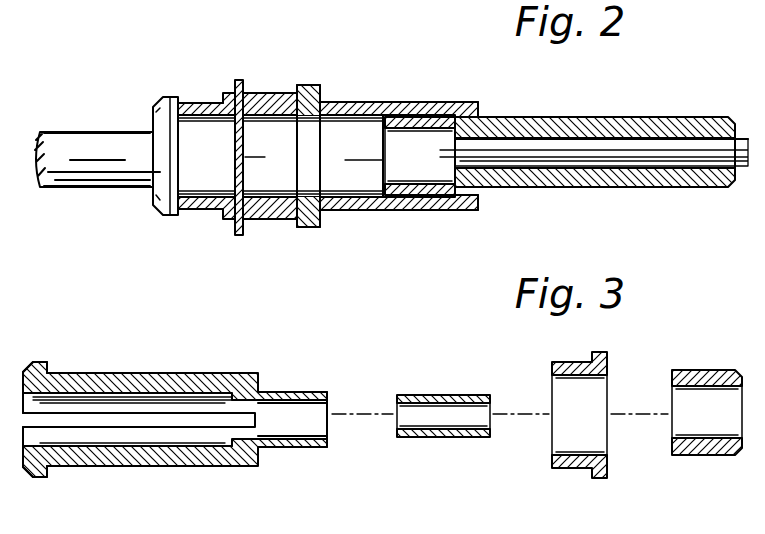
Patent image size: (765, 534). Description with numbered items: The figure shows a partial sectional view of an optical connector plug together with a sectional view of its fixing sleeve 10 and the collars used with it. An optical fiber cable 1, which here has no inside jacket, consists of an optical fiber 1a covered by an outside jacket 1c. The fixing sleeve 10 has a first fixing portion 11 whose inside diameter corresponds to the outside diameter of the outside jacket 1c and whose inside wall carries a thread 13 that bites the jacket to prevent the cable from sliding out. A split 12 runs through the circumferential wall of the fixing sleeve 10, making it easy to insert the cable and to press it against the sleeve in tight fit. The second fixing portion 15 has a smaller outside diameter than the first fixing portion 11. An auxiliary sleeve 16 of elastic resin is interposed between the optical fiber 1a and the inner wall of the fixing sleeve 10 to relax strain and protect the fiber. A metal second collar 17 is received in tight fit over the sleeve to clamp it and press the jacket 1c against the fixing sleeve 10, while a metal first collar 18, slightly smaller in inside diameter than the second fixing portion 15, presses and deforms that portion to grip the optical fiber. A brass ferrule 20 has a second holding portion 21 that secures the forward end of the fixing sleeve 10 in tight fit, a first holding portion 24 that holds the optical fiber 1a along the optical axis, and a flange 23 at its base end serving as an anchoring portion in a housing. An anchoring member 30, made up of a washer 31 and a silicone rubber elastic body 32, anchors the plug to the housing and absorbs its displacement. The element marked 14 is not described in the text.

In FIG. 2, the optical fiber cable 1 is at (108, 128).
In FIG. 2, the optical fiber 1a is at (700, 140).
In FIG. 2, the outside jacket 1c is at (70, 132).
In FIG. 2, the fixing sleeve 10 is at (347, 101).
In FIG. 3, the fixing sleeve 10 is at (198, 370).
In FIG. 2, the first fixing portion 11 is at (268, 125).
In FIG. 3, the first fixing portion 11 is at (118, 376).
In FIG. 3, the split 12 is at (112, 418).
In FIG. 3, the thread 13 is at (172, 442).
In FIG. 2, the flange 14 is at (168, 216).
In FIG. 3, the flange 14 is at (40, 479).
In FIG. 2, the second fixing portion 15 is at (417, 136).
In FIG. 3, the second fixing portion 15 is at (296, 392).
In FIG. 3, the auxiliary sleeve 16 is at (437, 395).
In FIG. 2, the second collar 17 is at (200, 212).
In FIG. 3, the second collar 17 is at (575, 362).
In FIG. 2, the first collar 18 is at (420, 196).
In FIG. 3, the first collar 18 is at (705, 370).
In FIG. 2, the ferrule 20 is at (551, 113).
In FIG. 2, the second holding portion 21 is at (453, 100).
In FIG. 2, the flange 23 is at (312, 228).
In FIG. 2, the first holding portion 24 is at (632, 125).
In FIG. 2, the anchoring member 30 is at (290, 270).
In FIG. 2, the washer 31 is at (239, 236).
In FIG. 2, the elastic body 32 is at (277, 220).